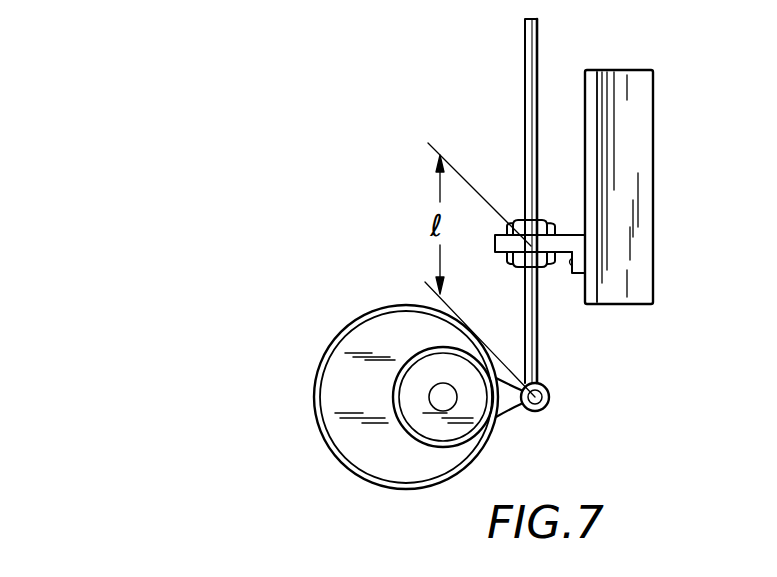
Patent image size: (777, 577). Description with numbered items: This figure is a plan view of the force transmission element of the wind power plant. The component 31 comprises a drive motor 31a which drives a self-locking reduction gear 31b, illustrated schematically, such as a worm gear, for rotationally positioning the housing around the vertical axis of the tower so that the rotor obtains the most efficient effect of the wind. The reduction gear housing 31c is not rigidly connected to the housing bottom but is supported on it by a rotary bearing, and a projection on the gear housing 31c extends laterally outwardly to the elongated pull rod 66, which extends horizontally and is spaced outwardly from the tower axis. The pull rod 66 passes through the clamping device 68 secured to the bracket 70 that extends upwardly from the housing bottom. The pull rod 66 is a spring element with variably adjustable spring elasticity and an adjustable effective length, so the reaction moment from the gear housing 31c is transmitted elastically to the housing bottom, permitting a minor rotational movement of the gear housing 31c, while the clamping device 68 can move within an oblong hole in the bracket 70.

The component 31 is at (391, 379).
The drive motor 31a is at (455, 428).
The self-locking reduction gear 31b is at (358, 332).
The reduction gear housing 31c is at (390, 308).
The pull rod 66 is at (525, 64).
The clamping device 68 is at (562, 243).
The bracket 70 is at (595, 72).